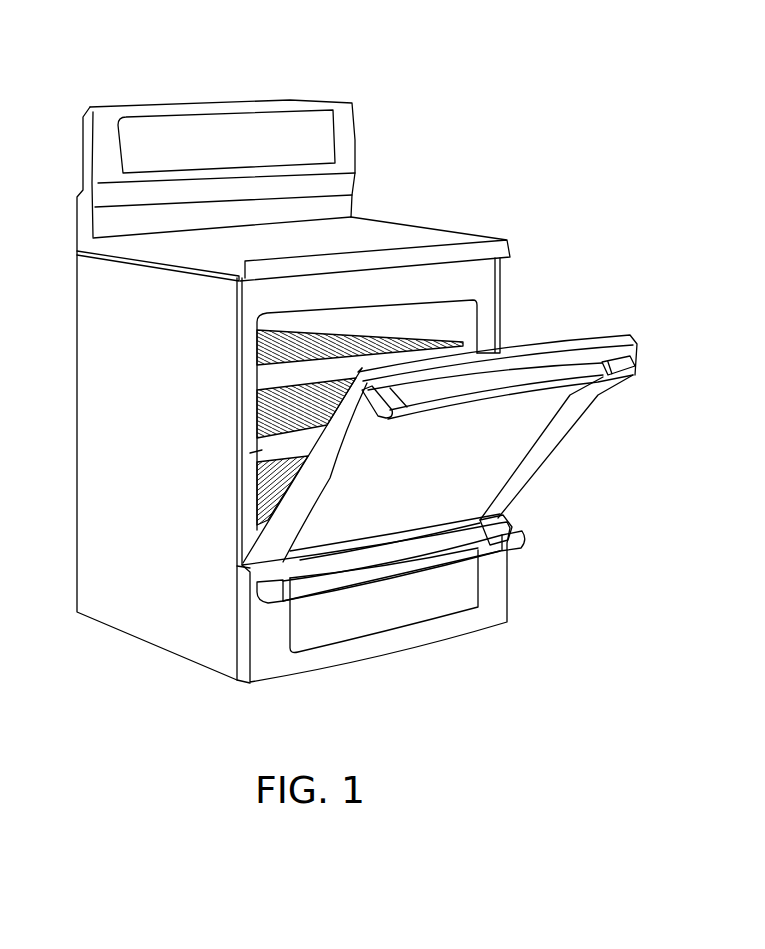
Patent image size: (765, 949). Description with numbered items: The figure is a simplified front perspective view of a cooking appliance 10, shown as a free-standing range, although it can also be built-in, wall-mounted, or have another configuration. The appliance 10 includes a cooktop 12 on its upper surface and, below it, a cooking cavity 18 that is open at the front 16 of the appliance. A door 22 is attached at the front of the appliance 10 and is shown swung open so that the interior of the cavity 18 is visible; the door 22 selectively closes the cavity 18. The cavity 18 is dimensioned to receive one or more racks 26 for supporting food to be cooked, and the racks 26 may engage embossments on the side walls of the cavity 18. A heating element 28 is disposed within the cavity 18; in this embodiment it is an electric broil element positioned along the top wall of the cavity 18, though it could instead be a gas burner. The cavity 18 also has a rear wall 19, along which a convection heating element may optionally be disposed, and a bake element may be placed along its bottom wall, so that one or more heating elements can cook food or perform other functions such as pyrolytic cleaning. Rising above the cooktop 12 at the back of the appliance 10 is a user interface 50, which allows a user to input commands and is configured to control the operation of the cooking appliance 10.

The cooking appliance 10 is at (108, 84).
The cooktop 12 is at (432, 234).
The front 16 is at (237, 304).
The cooking cavity 18 is at (472, 331).
The rear wall 19 is at (256, 452).
The door 22 is at (570, 420).
The racks 26 is at (264, 369).
The heating element 28 is at (398, 304).
The user interface 50 is at (328, 138).